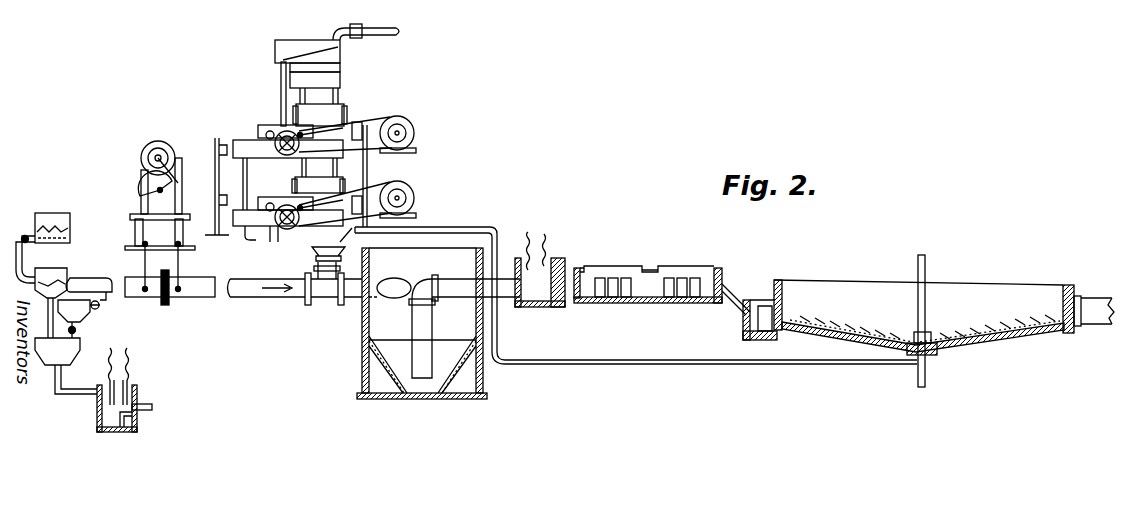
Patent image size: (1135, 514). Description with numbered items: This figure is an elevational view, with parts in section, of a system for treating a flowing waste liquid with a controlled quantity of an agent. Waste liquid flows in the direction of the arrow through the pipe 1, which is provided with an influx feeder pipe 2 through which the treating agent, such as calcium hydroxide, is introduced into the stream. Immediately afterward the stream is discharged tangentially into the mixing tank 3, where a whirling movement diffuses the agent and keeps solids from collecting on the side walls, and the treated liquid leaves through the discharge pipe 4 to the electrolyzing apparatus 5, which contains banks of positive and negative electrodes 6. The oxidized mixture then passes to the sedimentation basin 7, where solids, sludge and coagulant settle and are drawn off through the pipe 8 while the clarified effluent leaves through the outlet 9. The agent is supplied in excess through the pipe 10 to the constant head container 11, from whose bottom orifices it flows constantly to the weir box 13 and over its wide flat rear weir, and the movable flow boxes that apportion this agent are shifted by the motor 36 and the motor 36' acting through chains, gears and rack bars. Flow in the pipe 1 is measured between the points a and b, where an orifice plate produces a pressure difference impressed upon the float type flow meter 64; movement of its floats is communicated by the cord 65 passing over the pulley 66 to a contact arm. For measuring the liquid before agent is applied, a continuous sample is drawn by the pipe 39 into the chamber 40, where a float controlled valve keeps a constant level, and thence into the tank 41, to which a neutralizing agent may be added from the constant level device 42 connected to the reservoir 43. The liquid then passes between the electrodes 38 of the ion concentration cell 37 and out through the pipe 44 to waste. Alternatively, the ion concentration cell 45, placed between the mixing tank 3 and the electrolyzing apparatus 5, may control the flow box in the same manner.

The pipe 1 is at (286, 297).
The influx feeder pipe 2 is at (325, 302).
The mixing tank 3 is at (369, 343).
The discharge pipe 4 is at (430, 365).
The ion concentration cell 45 is at (546, 262).
The electrolyzing apparatus 5 is at (648, 302).
The electrodes 6 is at (698, 330).
The sedimentation basin 7 is at (995, 292).
The pipe 8 is at (925, 372).
The outlet 9 is at (1108, 330).
The pipe 10 is at (383, 33).
The constant head container 11 is at (342, 57).
The weir box 13 is at (342, 80).
The motor 36 is at (362, 132).
The motor 36' is at (365, 203).
The float type flow meter 64 is at (135, 232).
The cord 65 is at (176, 172).
The pulley 66 is at (165, 142).
The point a is at (145, 298).
The point b is at (178, 298).
The reservoir 43 is at (72, 222).
The constant level device 42 is at (35, 283).
The pipe 39 is at (106, 298).
The chamber 40 is at (80, 316).
The tank 41 is at (80, 345).
The ion concentration cell 37 is at (137, 428).
The pipe 44 is at (152, 405).
The electrodes 38 is at (113, 382).